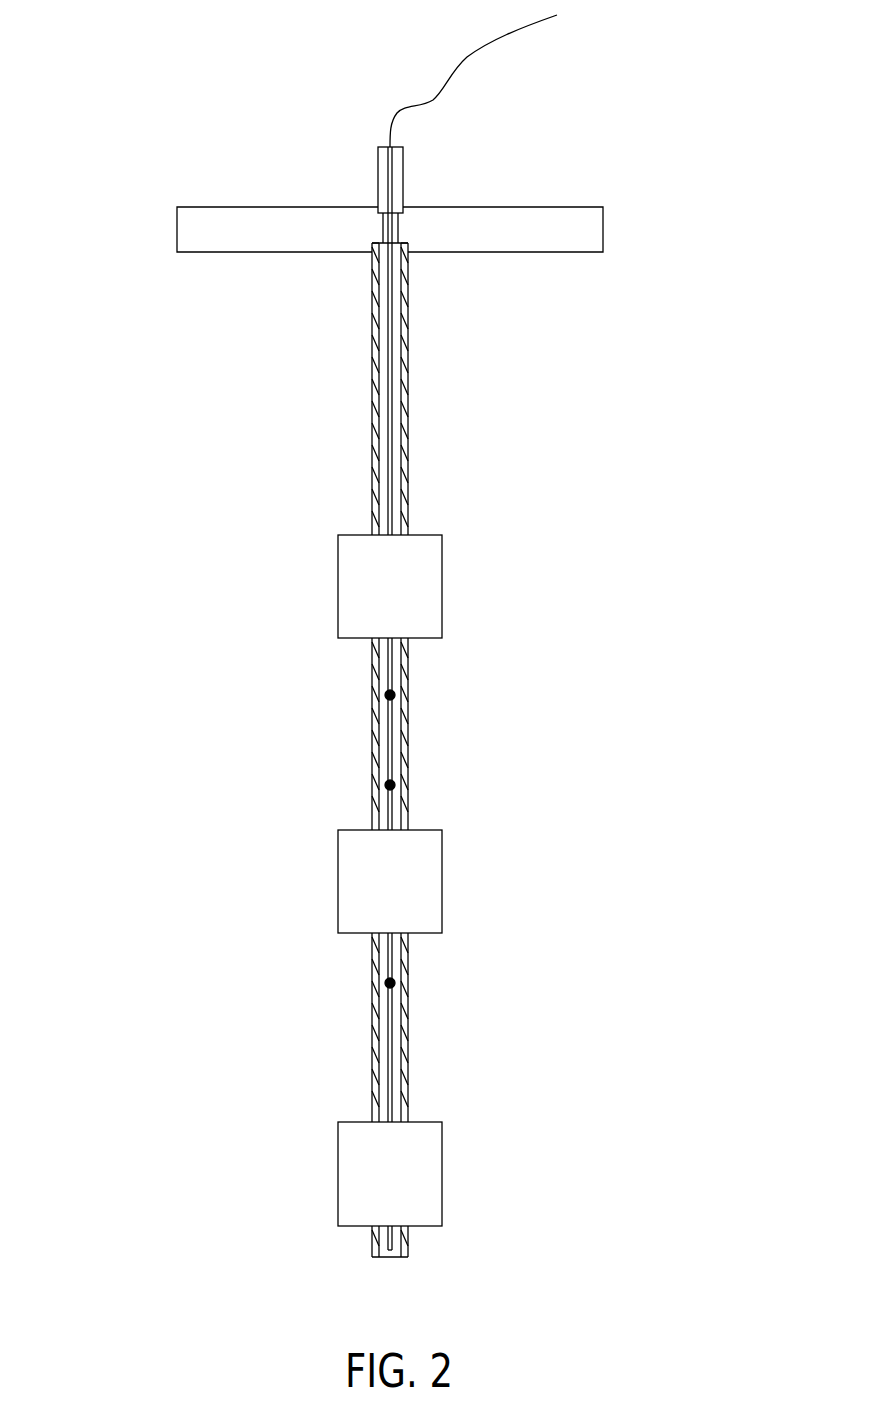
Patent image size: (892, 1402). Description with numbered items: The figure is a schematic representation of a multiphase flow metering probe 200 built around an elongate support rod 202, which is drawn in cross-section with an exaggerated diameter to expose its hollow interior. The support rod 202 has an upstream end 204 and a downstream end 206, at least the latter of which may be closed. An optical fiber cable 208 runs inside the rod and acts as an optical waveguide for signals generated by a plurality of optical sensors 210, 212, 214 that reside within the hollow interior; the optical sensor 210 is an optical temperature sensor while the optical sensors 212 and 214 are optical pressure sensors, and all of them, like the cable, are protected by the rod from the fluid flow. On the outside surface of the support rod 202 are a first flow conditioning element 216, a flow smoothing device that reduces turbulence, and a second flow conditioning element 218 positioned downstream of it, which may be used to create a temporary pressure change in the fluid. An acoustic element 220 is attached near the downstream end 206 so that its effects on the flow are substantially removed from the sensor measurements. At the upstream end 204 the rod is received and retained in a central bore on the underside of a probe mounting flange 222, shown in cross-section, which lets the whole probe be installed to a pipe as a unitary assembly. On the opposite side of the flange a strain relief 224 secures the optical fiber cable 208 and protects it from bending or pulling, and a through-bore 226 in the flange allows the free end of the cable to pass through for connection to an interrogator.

The multiphase flow metering probe 200 is at (150, 152).
The support rod 202 is at (408, 418).
The upstream end 204 is at (345, 272).
The downstream end 206 is at (440, 1248).
The optical fiber cable 208 is at (443, 82).
The optical temperature sensor 210 is at (396, 692).
The upstream optical pressure sensor 212 is at (396, 782).
The optical pressure sensor 214 is at (396, 980).
The first flow conditioning element 216 is at (406, 603).
The second flow conditioning element 218 is at (406, 896).
The acoustic element 220 is at (406, 1191).
The probe mounting flange 222 is at (592, 230).
The strain relief 224 is at (382, 173).
The through-bore 226 is at (400, 230).